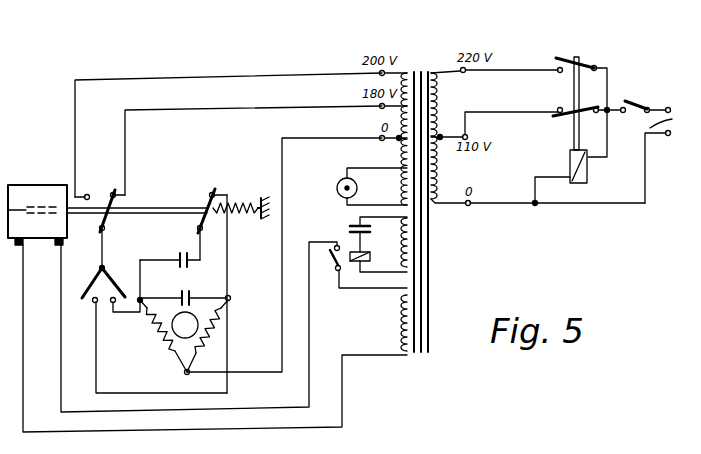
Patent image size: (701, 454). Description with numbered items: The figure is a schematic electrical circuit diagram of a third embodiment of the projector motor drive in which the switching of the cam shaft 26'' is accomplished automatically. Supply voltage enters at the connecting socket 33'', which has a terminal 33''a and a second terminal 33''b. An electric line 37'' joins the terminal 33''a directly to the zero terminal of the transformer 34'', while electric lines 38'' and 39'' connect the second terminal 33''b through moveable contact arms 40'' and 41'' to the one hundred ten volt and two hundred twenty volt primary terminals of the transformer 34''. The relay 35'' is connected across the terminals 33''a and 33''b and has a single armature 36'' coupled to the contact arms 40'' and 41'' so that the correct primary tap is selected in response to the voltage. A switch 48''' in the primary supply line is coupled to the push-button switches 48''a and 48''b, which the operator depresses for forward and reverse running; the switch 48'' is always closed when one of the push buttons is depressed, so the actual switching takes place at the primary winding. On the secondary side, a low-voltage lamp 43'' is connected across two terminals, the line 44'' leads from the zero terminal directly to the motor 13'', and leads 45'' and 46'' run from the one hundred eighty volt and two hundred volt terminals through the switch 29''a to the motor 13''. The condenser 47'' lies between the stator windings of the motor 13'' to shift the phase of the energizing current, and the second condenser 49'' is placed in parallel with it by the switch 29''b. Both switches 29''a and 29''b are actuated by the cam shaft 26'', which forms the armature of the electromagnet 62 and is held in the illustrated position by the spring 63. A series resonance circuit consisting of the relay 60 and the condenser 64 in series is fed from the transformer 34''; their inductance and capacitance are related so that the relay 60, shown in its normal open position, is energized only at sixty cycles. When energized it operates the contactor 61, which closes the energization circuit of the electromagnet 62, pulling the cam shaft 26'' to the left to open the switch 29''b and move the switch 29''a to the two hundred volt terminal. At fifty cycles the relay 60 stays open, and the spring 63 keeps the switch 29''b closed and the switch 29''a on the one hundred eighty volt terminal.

The electromagnet 62 is at (33, 200).
The cam shaft 26'' is at (137, 191).
The switch 29''a is at (100, 211).
The switch 29''b is at (207, 201).
The spring 63 is at (242, 198).
The lead 46'' is at (241, 119).
The lead 45'' is at (266, 150).
The line 44'' is at (325, 254).
The second condenser 49'' is at (170, 245).
The condenser 47'' is at (185, 287).
The push-button switch 48''a is at (83, 273).
The push-button switch 48''b is at (125, 268).
The switch 48'' is at (113, 301).
The motor 13'' is at (176, 336).
The low-voltage lamp 43'' is at (352, 186).
The condenser 64 is at (350, 229).
The relay 60 is at (370, 257).
The contactor 61 is at (333, 273).
The transformer 34'' is at (442, 227).
The electric line 39'' is at (497, 51).
The electric line 38'' is at (497, 112).
The electric line 37'' is at (538, 222).
The moveable contact arm 41'' is at (583, 91).
The armature 36'' is at (556, 103).
The moveable contact arm 40'' is at (574, 127).
The relay 35'' is at (583, 178).
The switch 48''' is at (630, 77).
The second terminal 33''b is at (650, 91).
The connecting socket 33'' is at (644, 126).
The terminal 33''a is at (653, 180).